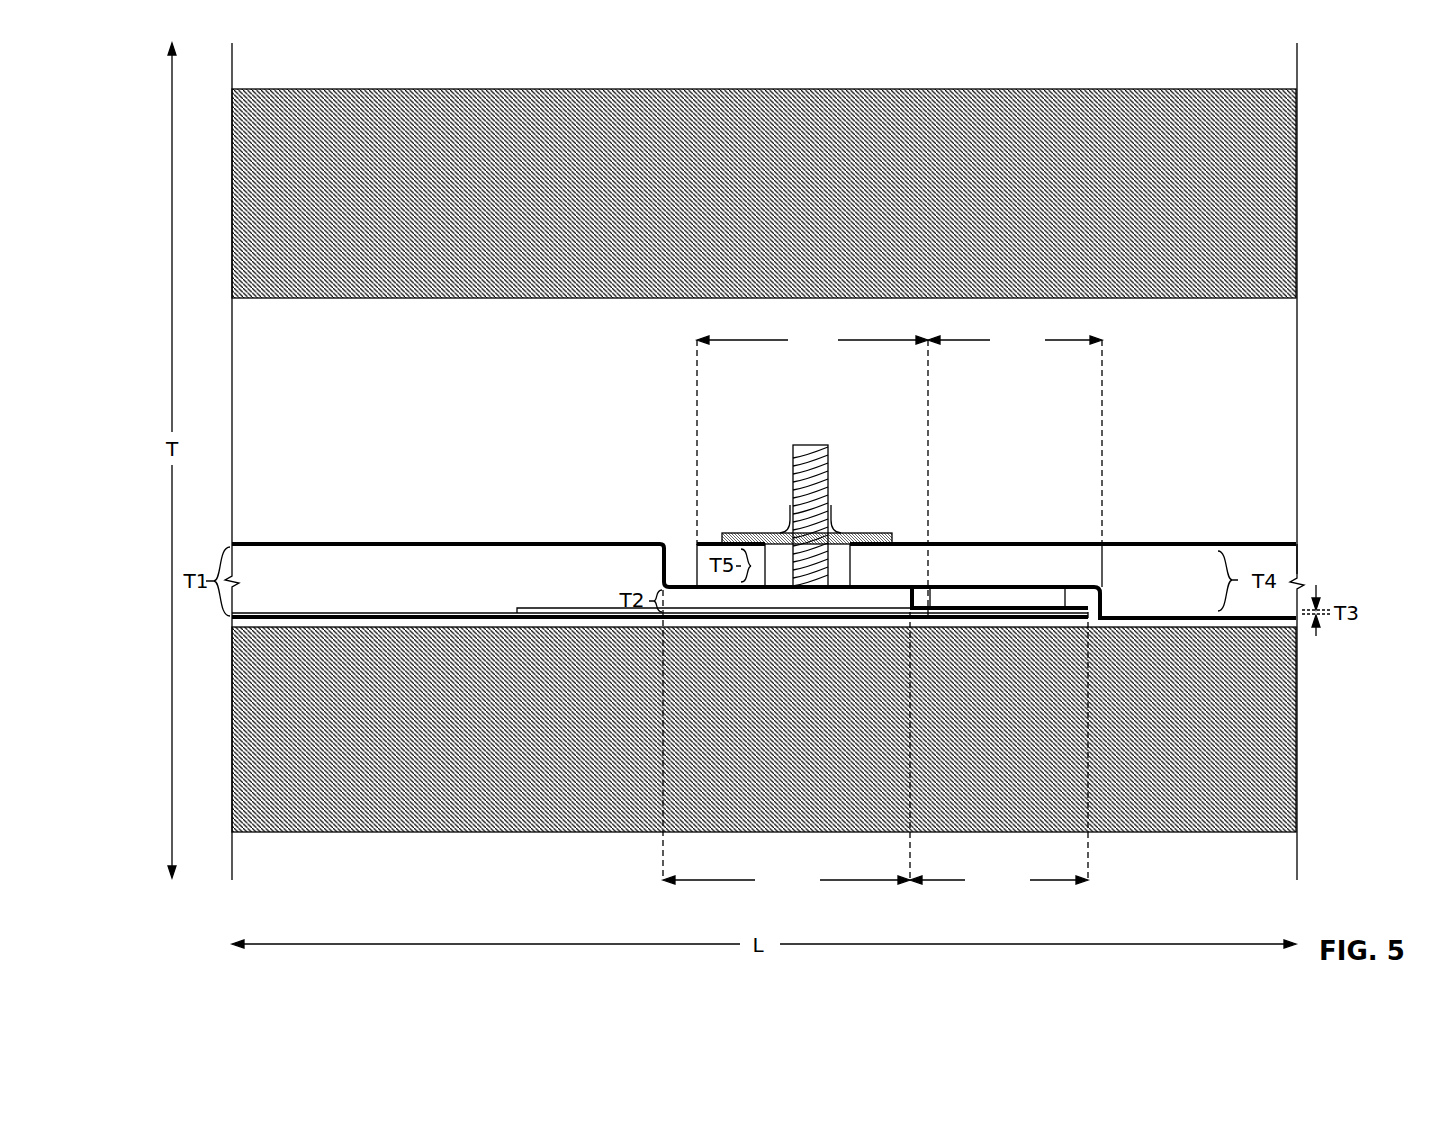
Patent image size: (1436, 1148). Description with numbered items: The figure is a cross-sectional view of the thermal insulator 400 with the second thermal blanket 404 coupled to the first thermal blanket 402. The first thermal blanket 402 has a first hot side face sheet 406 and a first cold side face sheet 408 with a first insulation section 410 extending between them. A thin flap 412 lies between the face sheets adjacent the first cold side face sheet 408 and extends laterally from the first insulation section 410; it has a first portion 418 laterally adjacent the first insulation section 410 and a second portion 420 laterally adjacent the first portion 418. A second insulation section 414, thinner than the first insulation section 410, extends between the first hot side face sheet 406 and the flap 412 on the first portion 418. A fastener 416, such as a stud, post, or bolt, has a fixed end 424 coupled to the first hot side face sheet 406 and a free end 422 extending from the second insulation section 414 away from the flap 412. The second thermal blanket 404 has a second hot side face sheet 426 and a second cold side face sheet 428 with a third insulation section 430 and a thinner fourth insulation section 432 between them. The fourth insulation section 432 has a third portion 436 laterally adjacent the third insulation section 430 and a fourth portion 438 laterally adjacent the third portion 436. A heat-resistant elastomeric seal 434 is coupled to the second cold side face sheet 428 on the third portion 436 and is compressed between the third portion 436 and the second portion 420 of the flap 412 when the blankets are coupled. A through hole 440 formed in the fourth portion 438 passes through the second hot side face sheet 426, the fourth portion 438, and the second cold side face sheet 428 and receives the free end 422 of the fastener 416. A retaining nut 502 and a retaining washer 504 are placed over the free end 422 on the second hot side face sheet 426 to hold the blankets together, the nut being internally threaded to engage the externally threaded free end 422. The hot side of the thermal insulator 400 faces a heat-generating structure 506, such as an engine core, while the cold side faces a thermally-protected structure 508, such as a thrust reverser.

The thermal insulator 400 is at (263, 541).
The first thermal blanket 402 is at (311, 541).
The second thermal blanket 404 is at (1262, 543).
The first hot side face sheet 406 is at (365, 541).
The first cold side face sheet 408 is at (408, 612).
The first insulation section 410 is at (466, 562).
The flap 412 is at (1102, 542).
The second insulation section 414 is at (697, 602).
The fastener 416 is at (790, 545).
The first portion 418 is at (786, 741).
The second portion 420 is at (999, 752).
The free end 422 is at (837, 487).
The fixed end 424 is at (851, 535).
The second hot side face sheet 426 is at (1232, 543).
The second cold side face sheet 428 is at (1197, 608).
The third insulation section 430 is at (1152, 573).
The fourth insulation section 432 is at (1050, 562).
The seal 434 is at (993, 597).
The third portion 436 is at (1015, 474).
The fourth portion 438 is at (812, 436).
The through hole 440 is at (790, 533).
The retaining nut 502 is at (823, 498).
The retaining washer 504 is at (893, 540).
The heat-generating structure 506 is at (797, 133).
The thermally-protected structure 508 is at (498, 762).